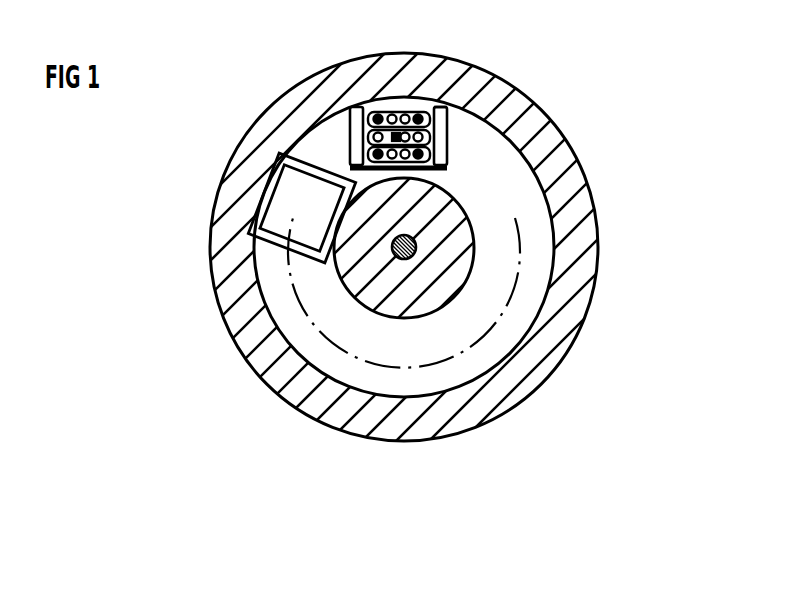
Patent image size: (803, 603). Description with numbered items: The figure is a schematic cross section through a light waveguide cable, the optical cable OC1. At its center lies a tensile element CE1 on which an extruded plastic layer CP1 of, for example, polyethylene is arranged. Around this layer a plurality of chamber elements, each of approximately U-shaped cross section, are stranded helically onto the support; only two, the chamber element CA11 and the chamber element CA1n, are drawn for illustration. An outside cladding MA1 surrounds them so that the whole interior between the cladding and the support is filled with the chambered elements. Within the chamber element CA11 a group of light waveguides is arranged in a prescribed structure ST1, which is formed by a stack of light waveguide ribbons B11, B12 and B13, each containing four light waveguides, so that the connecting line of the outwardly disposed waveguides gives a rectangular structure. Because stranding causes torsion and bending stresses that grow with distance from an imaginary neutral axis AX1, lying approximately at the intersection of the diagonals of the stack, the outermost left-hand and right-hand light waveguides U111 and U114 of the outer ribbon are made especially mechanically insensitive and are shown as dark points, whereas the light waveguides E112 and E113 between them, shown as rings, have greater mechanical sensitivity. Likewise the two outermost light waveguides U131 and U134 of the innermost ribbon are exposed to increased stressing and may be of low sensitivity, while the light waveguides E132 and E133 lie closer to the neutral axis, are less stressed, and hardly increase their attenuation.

The optical cable OC1 is at (212, 318).
The outside cladding MA1 is at (224, 240).
The extruded plastic layer CP1 is at (356, 290).
The tensile element CE1 is at (404, 259).
The chamber element CA1n is at (310, 174).
The prescribed structure ST1 is at (340, 112).
The light waveguide ribbon B11 is at (462, 100).
The light waveguide ribbon B12 is at (447, 128).
The light waveguide ribbon B13 is at (447, 153).
The chamber element CA11 is at (448, 110).
The neutral axis AX1 is at (366, 146).
The light waveguide U111 is at (378, 113).
The light waveguide E112 is at (392, 113).
The light waveguide E113 is at (406, 113).
The light waveguide U114 is at (419, 113).
The light waveguide U131 is at (375, 171).
The light waveguide E132 is at (393, 171).
The light waveguide E133 is at (440, 171).
The light waveguide U134 is at (447, 174).